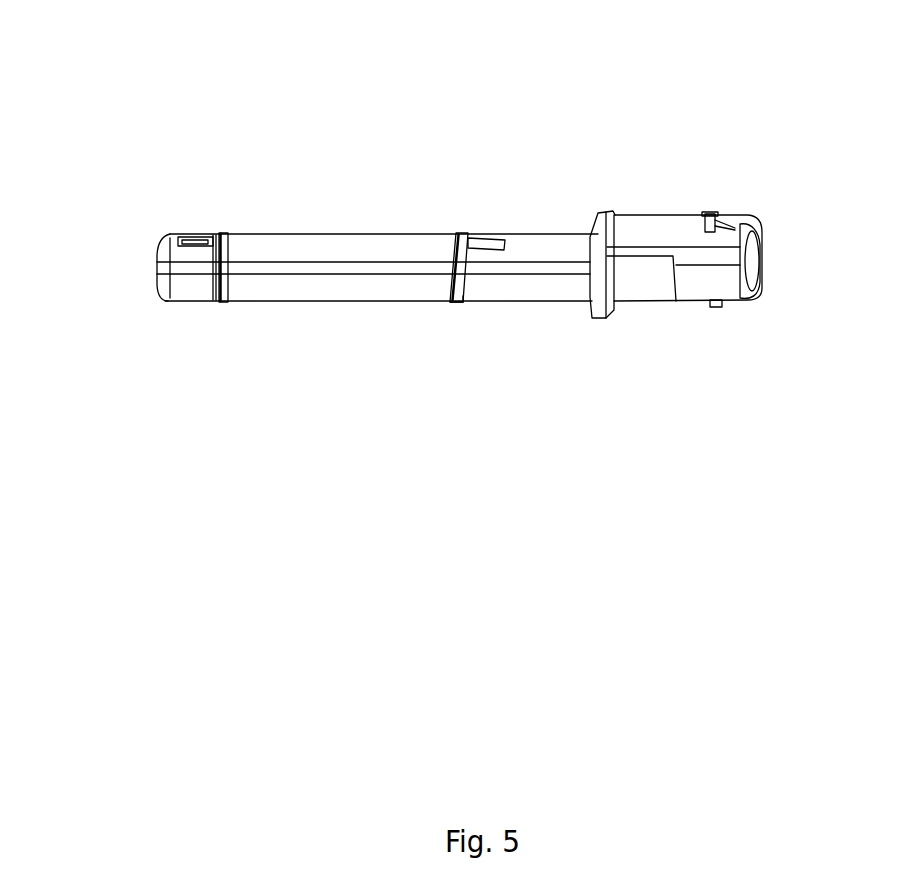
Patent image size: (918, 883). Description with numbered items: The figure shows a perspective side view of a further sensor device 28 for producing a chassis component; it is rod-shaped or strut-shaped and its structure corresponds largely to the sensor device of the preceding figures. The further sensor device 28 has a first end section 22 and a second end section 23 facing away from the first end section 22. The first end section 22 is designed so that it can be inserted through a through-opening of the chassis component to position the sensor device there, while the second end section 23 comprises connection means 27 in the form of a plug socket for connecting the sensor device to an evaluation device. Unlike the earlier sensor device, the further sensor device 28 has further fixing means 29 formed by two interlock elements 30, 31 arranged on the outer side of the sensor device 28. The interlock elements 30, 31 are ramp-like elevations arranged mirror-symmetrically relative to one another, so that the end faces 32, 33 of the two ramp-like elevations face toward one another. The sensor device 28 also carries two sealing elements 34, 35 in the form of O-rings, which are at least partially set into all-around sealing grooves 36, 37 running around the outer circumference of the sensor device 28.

The first end section 22 is at (148, 236).
The second end section 23 is at (721, 158).
The connection means 27 is at (738, 214).
The further sensor device 28 is at (538, 100).
The further fixing means 29 is at (480, 233).
The interlock element 30 is at (180, 244).
The interlock element 31 is at (497, 237).
The end face 32 is at (222, 252).
The end face 33 is at (447, 245).
The sealing element 34 is at (218, 303).
The sealing element 35 is at (454, 303).
The sealing groove 36 is at (211, 304).
The sealing groove 37 is at (468, 307).